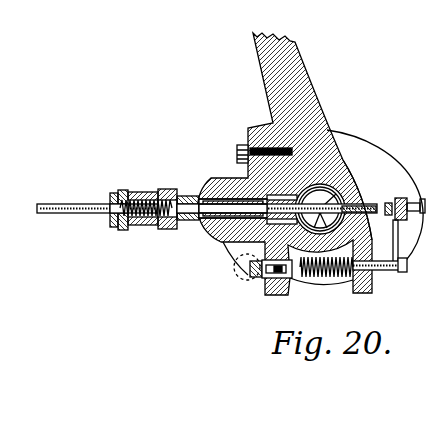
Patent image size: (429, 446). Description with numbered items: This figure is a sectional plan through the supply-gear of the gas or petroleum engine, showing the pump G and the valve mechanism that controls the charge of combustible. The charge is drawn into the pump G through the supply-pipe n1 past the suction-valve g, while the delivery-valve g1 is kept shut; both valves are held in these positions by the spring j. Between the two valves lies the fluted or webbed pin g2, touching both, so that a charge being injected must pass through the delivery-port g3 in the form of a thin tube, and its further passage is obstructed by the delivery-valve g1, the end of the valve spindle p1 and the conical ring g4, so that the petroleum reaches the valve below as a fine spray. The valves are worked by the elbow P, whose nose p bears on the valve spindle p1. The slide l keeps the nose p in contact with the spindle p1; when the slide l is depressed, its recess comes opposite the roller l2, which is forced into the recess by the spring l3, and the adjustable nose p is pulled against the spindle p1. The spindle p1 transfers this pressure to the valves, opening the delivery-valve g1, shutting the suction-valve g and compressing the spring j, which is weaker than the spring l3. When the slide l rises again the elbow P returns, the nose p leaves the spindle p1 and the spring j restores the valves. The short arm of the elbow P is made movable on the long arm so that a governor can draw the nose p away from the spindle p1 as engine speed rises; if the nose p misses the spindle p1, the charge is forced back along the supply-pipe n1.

The supply-pipe n1 is at (55, 213).
The spring j is at (143, 193).
The suction-valve g is at (160, 228).
The delivery-valve g1 is at (238, 192).
The fluted or webbed pin g2 is at (190, 189).
The delivery-port g3 is at (197, 221).
The conical ring g4 is at (345, 175).
The pump G is at (222, 236).
The nose p is at (389, 203).
The valve spindle p1 is at (393, 214).
The elbow P is at (395, 268).
The slide l is at (248, 278).
The roller l2 is at (270, 279).
The spring l3 is at (319, 279).